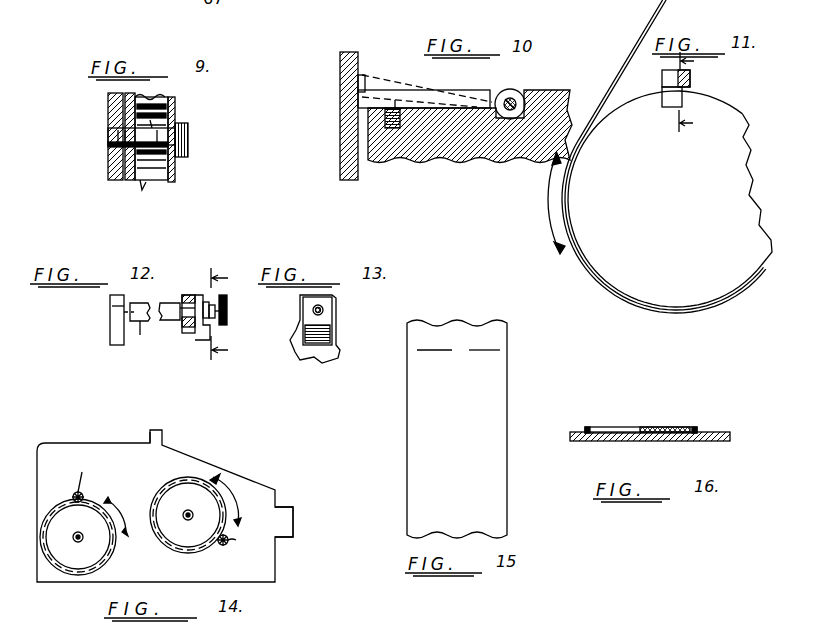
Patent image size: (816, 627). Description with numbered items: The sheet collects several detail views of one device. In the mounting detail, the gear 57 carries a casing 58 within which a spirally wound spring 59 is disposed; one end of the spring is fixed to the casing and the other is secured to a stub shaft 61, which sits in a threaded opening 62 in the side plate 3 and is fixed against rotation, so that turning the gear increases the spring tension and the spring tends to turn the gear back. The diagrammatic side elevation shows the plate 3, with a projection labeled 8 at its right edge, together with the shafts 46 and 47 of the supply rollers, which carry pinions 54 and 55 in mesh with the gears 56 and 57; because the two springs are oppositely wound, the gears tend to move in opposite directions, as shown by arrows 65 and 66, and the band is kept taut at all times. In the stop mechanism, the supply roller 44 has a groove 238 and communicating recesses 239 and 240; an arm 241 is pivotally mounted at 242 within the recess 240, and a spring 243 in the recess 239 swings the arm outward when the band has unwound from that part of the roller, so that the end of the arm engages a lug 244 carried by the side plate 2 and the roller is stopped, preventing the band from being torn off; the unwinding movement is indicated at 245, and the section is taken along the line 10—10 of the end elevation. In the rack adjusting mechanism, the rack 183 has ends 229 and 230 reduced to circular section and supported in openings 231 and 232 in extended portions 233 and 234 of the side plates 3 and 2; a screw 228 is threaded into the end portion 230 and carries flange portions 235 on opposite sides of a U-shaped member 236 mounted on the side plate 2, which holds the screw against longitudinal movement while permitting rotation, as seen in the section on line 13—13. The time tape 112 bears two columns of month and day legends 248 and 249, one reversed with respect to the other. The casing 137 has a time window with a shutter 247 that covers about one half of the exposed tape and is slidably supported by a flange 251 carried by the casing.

In FIG. 10, the side plate 2 is at (340, 156).
In FIG. 12, the side plate 2 is at (200, 338).
In FIG. 13, the side plate 2 is at (340, 356).
In FIG. 9, the side plate 3 is at (108, 165).
In FIG. 12, the side plate 3 is at (110, 338).
In FIG. 14, the side plate 3 is at (50, 495).
In FIG. 14, the housing projection 8 is at (287, 508).
In FIG. 11, the section line 10— 10 is at (696, 94).
In FIG. 12, the section line 13— 13 is at (212, 317).
In FIG. 10, the supply roller 44 is at (436, 150).
In FIG. 11, the supply roller 44 is at (740, 119).
In FIG. 14, the shaft 46 is at (80, 492).
In FIG. 14, the shaft 47 is at (228, 545).
In FIG. 14, the pinion 54 is at (230, 538).
In FIG. 14, the pinion 55 is at (84, 494).
In FIG. 14, the gear 56 is at (214, 548).
In FIG. 9, the gear 57 is at (130, 182).
In FIG. 14, the gear 57 is at (72, 500).
In FIG. 9, the casing 58 is at (172, 173).
In FIG. 9, the spirally wound spring 59 is at (150, 178).
In FIG. 9, the stub shaft 61 is at (170, 115).
In FIG. 9, the threaded opening 62 is at (122, 135).
In FIG. 14, the arrow 65 is at (230, 495).
In FIG. 14, the arrow 66 is at (118, 515).
In FIG. 15, the time tape 112 is at (494, 385).
In FIG. 16, the casing 137 is at (583, 441).
In FIG. 12, the rack 183 is at (140, 335).
In FIG. 12, the screw 228 is at (210, 312).
In FIG. 12, the reduced end portion of rack 229 is at (136, 304).
In FIG. 12, the reduced end portion of rack 230 is at (183, 312).
In FIG. 12, the opening 231 is at (110, 311).
In FIG. 12, the opening 232 is at (212, 300).
In FIG. 12, the extended portion 233 is at (124, 306).
In FIG. 14, the extended portion 233 is at (160, 436).
In FIG. 12, the extended portion 234 is at (188, 295).
In FIG. 13, the extended portion 234 is at (325, 296).
In FIG. 12, the flange portions 235 is at (222, 325).
In FIG. 13, the flange portions 235 is at (325, 308).
In FIG. 12, the U-shaped member 236 is at (222, 309).
In FIG. 13, the U-shaped member 236 is at (330, 318).
In FIG. 10, the groove 238 is at (494, 100).
In FIG. 10, the recess 239 is at (396, 107).
In FIG. 10, the recess 240 is at (522, 90).
In FIG. 10, the arm 241 is at (455, 97).
In FIG. 11, the arm 241 is at (662, 82).
In FIG. 10, the pivot 242 is at (512, 103).
In FIG. 10, the spring 243 is at (385, 124).
In FIG. 10, the lug 244 is at (360, 75).
In FIG. 11, the lug 244 is at (690, 81).
In FIG. 11, the unwinding movement 245 is at (552, 211).
In FIG. 16, the shutter 247 is at (672, 427).
In FIG. 15, the column of legends 248 is at (432, 345).
In FIG. 15, the column of legends 249 is at (490, 345).
In FIG. 16, the flange 251 is at (696, 429).